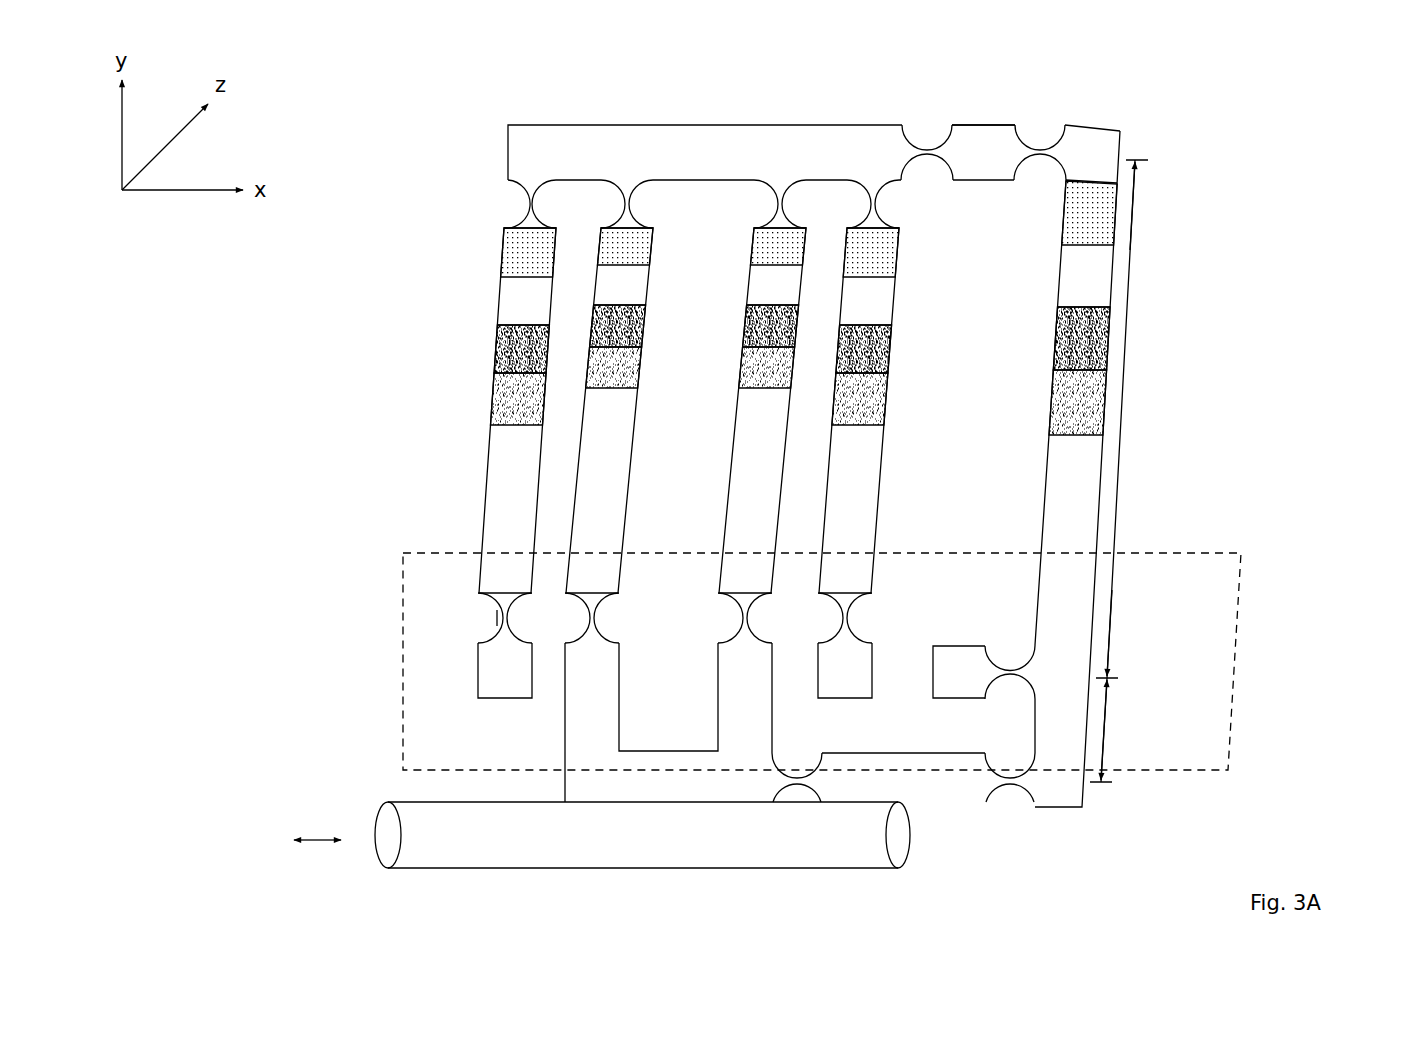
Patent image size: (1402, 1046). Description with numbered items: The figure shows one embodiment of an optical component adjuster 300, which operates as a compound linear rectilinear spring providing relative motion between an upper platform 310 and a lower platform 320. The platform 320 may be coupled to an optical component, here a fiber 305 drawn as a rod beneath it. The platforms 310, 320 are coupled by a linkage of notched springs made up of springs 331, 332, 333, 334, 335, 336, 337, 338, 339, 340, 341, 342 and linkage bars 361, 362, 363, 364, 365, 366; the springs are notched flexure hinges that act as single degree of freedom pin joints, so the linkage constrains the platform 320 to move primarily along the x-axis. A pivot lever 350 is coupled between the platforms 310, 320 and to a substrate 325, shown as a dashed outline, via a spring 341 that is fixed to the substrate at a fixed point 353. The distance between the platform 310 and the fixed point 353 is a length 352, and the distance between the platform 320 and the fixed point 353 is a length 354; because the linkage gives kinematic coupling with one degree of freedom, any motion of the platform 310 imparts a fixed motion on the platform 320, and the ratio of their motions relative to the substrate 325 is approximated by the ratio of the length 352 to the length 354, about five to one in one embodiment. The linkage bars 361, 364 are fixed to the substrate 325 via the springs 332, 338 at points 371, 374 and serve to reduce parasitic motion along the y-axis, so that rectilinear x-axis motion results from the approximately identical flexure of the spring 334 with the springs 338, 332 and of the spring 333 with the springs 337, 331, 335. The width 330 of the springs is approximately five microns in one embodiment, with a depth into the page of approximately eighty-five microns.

The adjuster 300 is at (1124, 83).
The fiber 305 is at (412, 801).
The platform 310 is at (720, 132).
The platform 320 is at (648, 750).
The substrate 325 is at (1243, 572).
The width 330 is at (497, 619).
The spring 331 is at (523, 207).
The spring 332 is at (477, 607).
The spring 333 is at (620, 207).
The spring 334 is at (590, 619).
The spring 335 is at (773, 207).
The spring 336 is at (741, 619).
The spring 337 is at (866, 207).
The spring 338 is at (841, 620).
The spring 339 is at (922, 170).
The spring 340 is at (1037, 170).
The spring 341 is at (1012, 658).
The spring 342 is at (1005, 762).
The pivot lever 350 is at (1050, 418).
The length 352 is at (1122, 468).
The fixed point 353 is at (933, 671).
The length 354 is at (1105, 728).
The linkage bar 361 is at (490, 404).
The linkage bar 362 is at (637, 398).
The linkage bar 363 is at (735, 440).
The linkage bar 364 is at (890, 368).
The linkage bar 365 is at (975, 132).
The linkage bar 366 is at (970, 800).
The point 371 is at (483, 700).
The point 374 is at (846, 700).